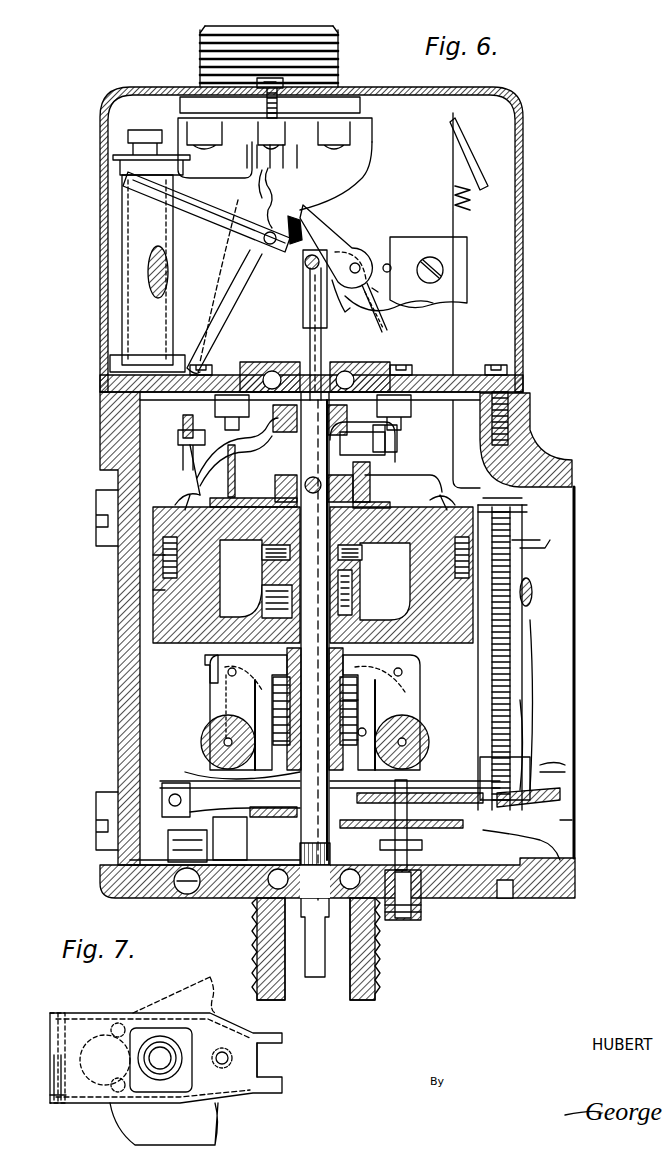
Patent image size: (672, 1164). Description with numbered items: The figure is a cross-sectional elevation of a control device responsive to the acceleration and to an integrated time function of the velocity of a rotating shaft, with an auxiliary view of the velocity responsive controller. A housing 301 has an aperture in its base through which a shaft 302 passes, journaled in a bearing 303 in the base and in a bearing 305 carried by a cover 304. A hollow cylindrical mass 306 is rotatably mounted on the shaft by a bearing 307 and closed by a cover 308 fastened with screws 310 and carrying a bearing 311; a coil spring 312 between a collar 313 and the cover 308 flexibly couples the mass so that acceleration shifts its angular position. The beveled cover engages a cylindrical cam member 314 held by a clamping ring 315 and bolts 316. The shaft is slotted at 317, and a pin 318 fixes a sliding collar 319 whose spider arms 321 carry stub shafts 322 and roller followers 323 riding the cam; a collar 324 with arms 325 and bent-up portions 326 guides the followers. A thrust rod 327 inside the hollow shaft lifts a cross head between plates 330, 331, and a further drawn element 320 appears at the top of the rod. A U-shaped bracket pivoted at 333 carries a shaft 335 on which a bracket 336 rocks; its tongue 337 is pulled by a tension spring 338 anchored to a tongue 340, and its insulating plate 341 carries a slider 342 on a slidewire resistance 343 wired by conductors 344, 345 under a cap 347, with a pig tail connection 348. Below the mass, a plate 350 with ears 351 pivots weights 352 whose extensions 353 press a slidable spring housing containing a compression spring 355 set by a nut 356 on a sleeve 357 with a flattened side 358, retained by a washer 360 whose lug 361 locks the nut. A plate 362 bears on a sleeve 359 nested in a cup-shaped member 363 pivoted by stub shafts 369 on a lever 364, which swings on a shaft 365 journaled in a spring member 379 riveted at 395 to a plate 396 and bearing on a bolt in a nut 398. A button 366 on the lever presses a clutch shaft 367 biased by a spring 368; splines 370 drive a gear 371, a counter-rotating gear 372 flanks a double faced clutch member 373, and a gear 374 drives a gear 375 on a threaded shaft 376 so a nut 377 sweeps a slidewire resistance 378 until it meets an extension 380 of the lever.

In FIG. 6, the housing 301 is at (130, 640).
In FIG. 6, the shaft 302 is at (318, 985).
In FIG. 6, the bearing 303 is at (258, 900).
In FIG. 6, the cover 304 is at (468, 368).
In FIG. 6, the bearing 305 is at (370, 367).
In FIG. 6, the mass 306 is at (215, 590).
In FIG. 6, the bearing 307 is at (352, 615).
In FIG. 6, the cover 308 is at (352, 567).
In FIG. 6, the screws 310 is at (160, 572).
In FIG. 6, the bearing 311 is at (367, 591).
In FIG. 6, the coil spring 312 is at (262, 555).
In FIG. 6, the collar 313 is at (262, 604).
In FIG. 6, the cylindrical cam member 314 is at (405, 460).
In FIG. 6, the outer clamping ring 315 is at (470, 502).
In FIG. 6, the bolts 316 is at (185, 495).
In FIG. 6, the slot 317 is at (302, 456).
In FIG. 6, the pin 318 is at (300, 444).
In FIG. 6, the collar 319 is at (278, 418).
In FIG. 6, the pivot pin 320 is at (305, 262).
In FIG. 6, the arms 321 is at (404, 436).
In FIG. 6, the stub shaft 322 is at (250, 442).
In FIG. 6, the roller follower 323 is at (185, 455).
In FIG. 6, the collar 324 is at (273, 480).
In FIG. 6, the arms 325 is at (400, 478).
In FIG. 6, the bent-up portion 326 is at (183, 430).
In FIG. 6, the thrust rod 327 is at (309, 305).
In FIG. 6, the plate 330 is at (303, 284).
In FIG. 6, the plate 331 is at (362, 188).
In FIG. 6, the pivot 333 is at (467, 290).
In FIG. 6, the shaft 335 is at (345, 233).
In FIG. 6, the bracket 336 is at (339, 296).
In FIG. 6, the tongue 337 is at (362, 315).
In FIG. 6, the tension spring 338 is at (472, 196).
In FIG. 6, the tongue 340 is at (466, 138).
In FIG. 6, the insulating plate 341 is at (290, 184).
In FIG. 6, the slider 342 is at (212, 222).
In FIG. 6, the slidewire resistance 343 is at (128, 233).
In FIG. 6, the conductor 344 is at (212, 168).
In FIG. 6, the conductor 345 is at (212, 318).
In FIG. 6, the cap 347 is at (523, 160).
In FIG. 6, the pig tail connection 348 is at (285, 190).
In FIG. 6, the plate 350 is at (205, 672).
In FIG. 6, the ears 351 is at (212, 704).
In FIG. 6, the weight 352 is at (208, 728).
In FIG. 6, the extension 353 is at (420, 705).
In FIG. 6, the compression spring 355 is at (389, 262).
In FIG. 6, the nut 356 is at (255, 720).
In FIG. 6, the sleeve 357 is at (212, 685).
In FIG. 6, the flattened side 358 is at (420, 718).
In FIG. 7, the sleeve 359 is at (182, 1050).
In FIG. 6, the washer 360 is at (273, 700).
In FIG. 6, the down struck lug 361 is at (422, 735).
In FIG. 6, the plate 362 is at (215, 782).
In FIG. 6, the cup-shaped member 363 is at (247, 838).
In FIG. 7, the cup-shaped member 363 is at (195, 1068).
In FIG. 6, the lever 364 is at (245, 799).
In FIG. 6, the shaft 365 is at (163, 795).
In FIG. 7, the shaft 365 is at (60, 1013).
In FIG. 6, the button 366 is at (400, 780).
In FIG. 6, the clutch shaft 367 is at (421, 895).
In FIG. 6, the compression spring 368 is at (415, 912).
In FIG. 7, the stub shafts 369 is at (163, 1013).
In FIG. 6, the splines 370 is at (300, 850).
In FIG. 6, the gear 371 is at (470, 890).
In FIG. 6, the gear 372 is at (465, 828).
In FIG. 6, the double faced clutch member 373 is at (440, 845).
In FIG. 6, the gear 374 is at (512, 750).
In FIG. 6, the gear 375 is at (565, 792).
In FIG. 6, the threaded shaft 376 is at (512, 563).
In FIG. 6, the nut 377 is at (524, 690).
In FIG. 6, the slidewire resistance 378 is at (530, 592).
In FIG. 6, the spring member 379 is at (162, 818).
In FIG. 7, the spring member 379 is at (60, 1085).
In FIG. 6, the extension 380 is at (562, 762).
In FIG. 7, the extension 380 is at (265, 1082).
In FIG. 7, the rivet 395 is at (118, 1022).
In FIG. 6, the plate 396 is at (576, 825).
In FIG. 7, the plate 396 is at (215, 1010).
In FIG. 6, the nut 398 is at (165, 850).